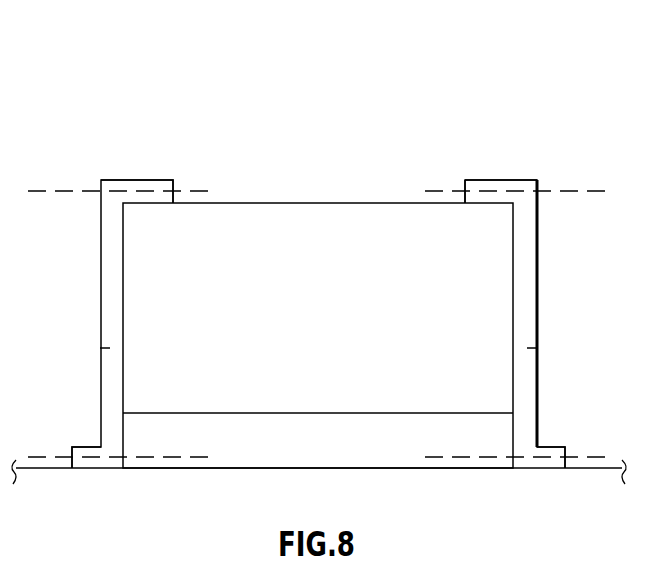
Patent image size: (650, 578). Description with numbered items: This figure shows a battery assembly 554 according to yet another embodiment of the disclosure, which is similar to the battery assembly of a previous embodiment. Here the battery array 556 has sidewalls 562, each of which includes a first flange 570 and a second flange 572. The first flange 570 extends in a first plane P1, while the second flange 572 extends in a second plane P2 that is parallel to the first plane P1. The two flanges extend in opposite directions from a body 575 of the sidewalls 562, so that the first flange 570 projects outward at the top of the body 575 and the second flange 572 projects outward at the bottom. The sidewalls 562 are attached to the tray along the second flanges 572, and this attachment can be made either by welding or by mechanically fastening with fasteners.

The battery assembly 554 is at (316, 100).
The battery array 556 is at (358, 172).
The sidewalls 562 is at (110, 290).
The first flange 570 is at (143, 180).
The second flange 572 is at (82, 447).
The body 575 is at (105, 348).
The first plane P1 is at (68, 197).
The second plane P2 is at (60, 452).